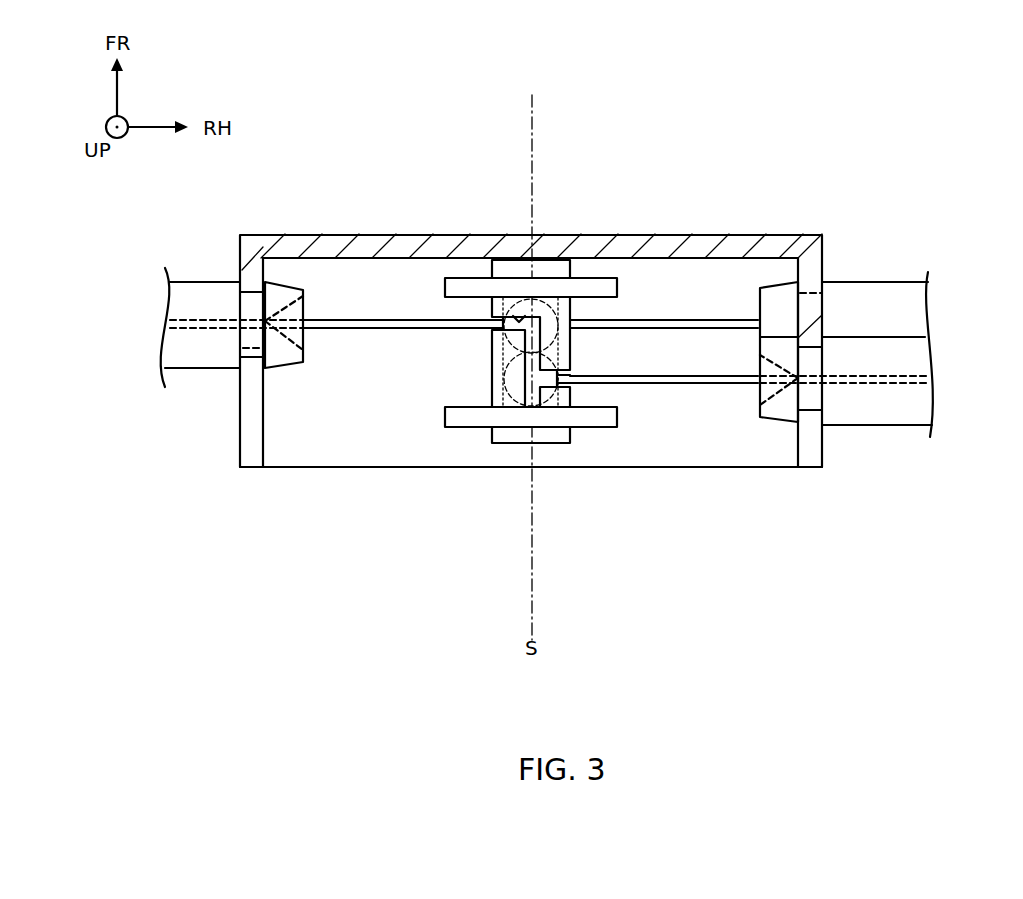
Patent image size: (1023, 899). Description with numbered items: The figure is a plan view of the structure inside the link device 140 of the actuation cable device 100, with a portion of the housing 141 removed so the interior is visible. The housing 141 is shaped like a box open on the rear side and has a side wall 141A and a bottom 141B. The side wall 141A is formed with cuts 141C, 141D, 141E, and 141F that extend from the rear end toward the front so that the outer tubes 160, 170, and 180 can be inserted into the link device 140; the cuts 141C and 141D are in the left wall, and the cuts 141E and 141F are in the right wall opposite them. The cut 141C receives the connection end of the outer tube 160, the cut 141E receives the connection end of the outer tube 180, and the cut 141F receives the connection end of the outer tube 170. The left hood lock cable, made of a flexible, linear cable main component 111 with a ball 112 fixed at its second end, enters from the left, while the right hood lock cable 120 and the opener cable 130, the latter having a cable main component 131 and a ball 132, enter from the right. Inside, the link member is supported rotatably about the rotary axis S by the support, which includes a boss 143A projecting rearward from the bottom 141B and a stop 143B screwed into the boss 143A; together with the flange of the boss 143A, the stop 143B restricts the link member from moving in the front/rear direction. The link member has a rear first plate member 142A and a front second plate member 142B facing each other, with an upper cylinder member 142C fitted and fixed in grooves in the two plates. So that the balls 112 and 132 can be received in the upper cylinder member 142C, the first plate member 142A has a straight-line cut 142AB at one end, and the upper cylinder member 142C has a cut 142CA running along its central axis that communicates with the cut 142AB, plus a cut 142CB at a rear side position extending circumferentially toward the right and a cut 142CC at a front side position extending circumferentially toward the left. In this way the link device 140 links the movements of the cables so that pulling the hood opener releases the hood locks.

The actuation cable device 100 is at (920, 538).
The cable main component 111 is at (372, 330).
The ball 112 is at (508, 325).
The right hood lock cable 120 is at (688, 320).
The opener cable 130 is at (705, 423).
The cable main component 131 is at (680, 383).
The ball 132 is at (567, 353).
The link device 140 is at (373, 302).
The housing 141 is at (290, 227).
The side wall 141A is at (243, 468).
The bottom 141B is at (378, 252).
The cut 141C is at (253, 440).
The cut 141D is at (255, 347).
The cut 141E is at (812, 445).
The cut 141F is at (812, 293).
The first plate member 142A is at (472, 420).
The cut 142AB is at (528, 395).
The second plate member 142B is at (465, 288).
The upper cylinder member 142C is at (485, 383).
The cut 142CA is at (534, 395).
The cut 142CB is at (567, 378).
The cut 142CC is at (520, 316).
The boss 143A is at (553, 265).
The stop 143B is at (505, 438).
The outer tube 160 is at (207, 258).
The outer tube 170 is at (887, 267).
The outer tube 180 is at (919, 437).